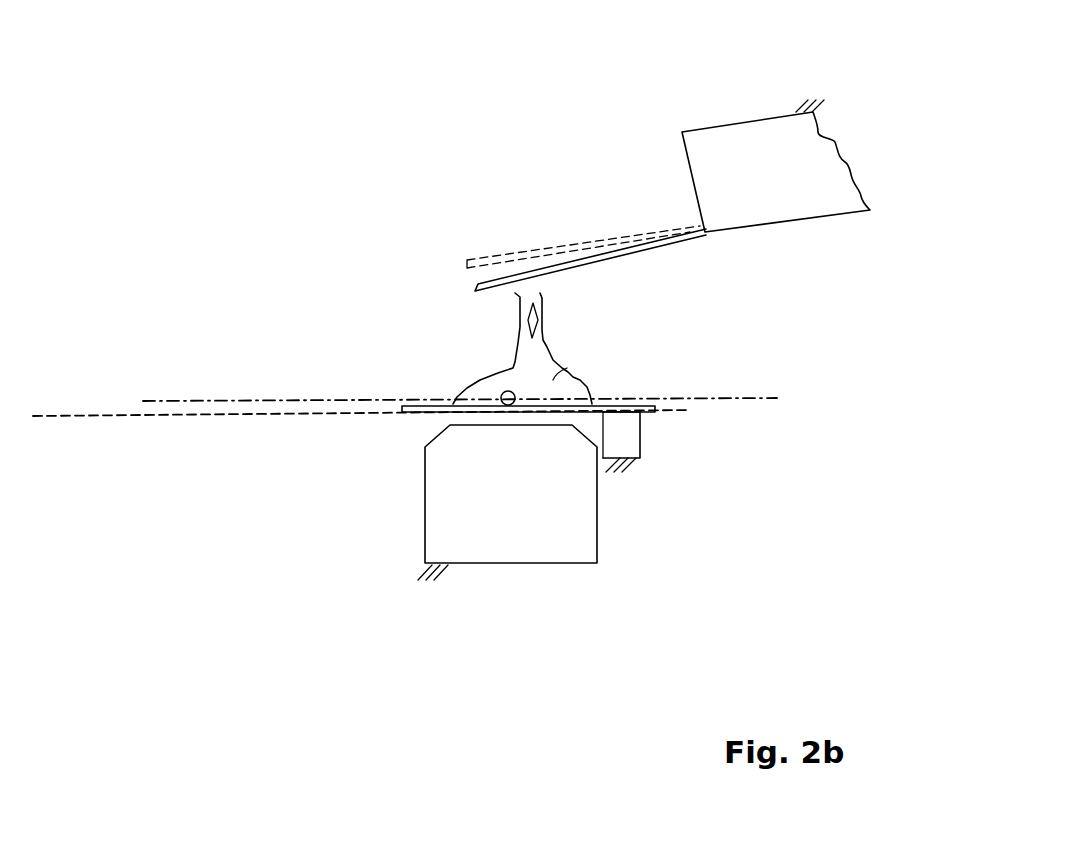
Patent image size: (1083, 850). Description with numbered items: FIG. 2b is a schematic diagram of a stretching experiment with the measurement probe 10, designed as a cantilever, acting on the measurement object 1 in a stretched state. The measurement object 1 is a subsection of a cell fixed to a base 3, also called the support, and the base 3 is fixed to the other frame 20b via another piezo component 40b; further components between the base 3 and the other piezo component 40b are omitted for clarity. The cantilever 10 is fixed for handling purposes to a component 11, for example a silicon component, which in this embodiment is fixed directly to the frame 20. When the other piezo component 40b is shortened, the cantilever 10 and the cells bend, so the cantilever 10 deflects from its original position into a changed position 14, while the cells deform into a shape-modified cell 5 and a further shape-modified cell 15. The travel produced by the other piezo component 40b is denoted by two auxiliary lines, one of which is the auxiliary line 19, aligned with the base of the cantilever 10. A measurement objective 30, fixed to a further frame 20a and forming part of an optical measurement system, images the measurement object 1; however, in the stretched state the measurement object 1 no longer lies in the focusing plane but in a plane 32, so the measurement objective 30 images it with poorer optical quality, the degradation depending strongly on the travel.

The measurement object 1 is at (500, 402).
The base 3 is at (640, 411).
The shape-modified cell 5 is at (567, 368).
The measurement probe 10 is at (537, 262).
The component 11 is at (833, 180).
The changed position 14 is at (477, 288).
The further shape-modified cell 15 is at (537, 285).
The auxiliary line 19 is at (172, 417).
The frame 20 is at (812, 98).
The further frame 20a is at (436, 582).
The other frame 20b is at (622, 476).
The measurement objective 30 is at (530, 545).
The plane 32 is at (313, 400).
The other piezo component 40b is at (631, 447).